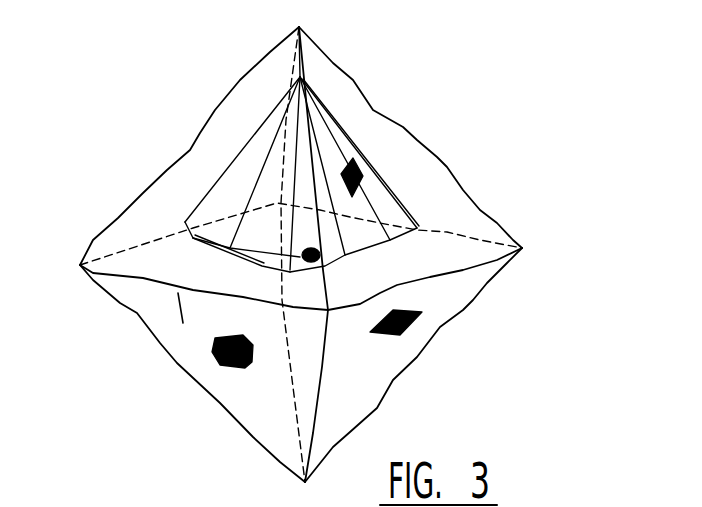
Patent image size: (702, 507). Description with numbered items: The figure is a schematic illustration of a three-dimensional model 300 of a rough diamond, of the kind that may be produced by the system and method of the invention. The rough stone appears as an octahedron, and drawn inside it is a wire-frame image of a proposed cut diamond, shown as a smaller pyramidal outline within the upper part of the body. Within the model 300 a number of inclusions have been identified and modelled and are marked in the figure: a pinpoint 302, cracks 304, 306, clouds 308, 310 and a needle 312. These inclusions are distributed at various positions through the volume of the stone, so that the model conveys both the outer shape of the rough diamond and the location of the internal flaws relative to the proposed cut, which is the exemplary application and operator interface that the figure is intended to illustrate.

The 3D model 300 is at (470, 68).
The pinpoint inclusion 302 is at (253, 153).
The crack inclusion 304 is at (362, 172).
The crack inclusion 306 is at (413, 318).
The cloud inclusion 308 is at (213, 355).
The cloud inclusion 310 is at (320, 255).
The needle inclusion 312 is at (178, 303).